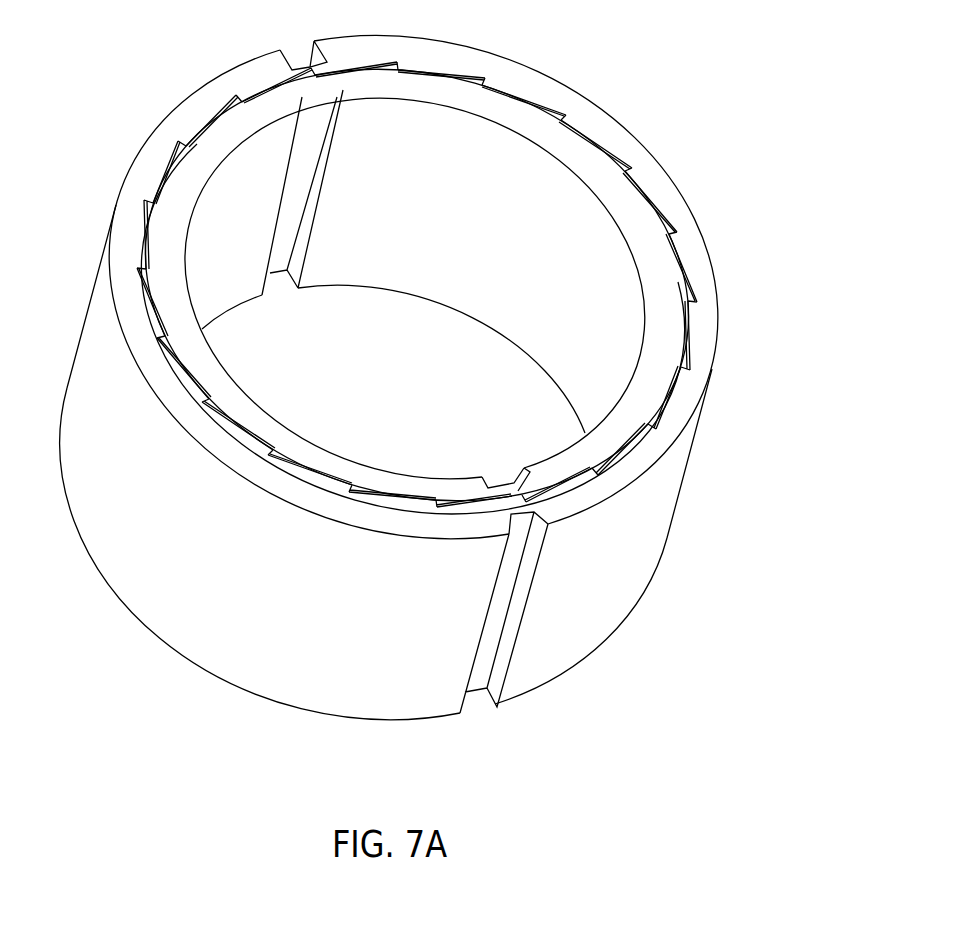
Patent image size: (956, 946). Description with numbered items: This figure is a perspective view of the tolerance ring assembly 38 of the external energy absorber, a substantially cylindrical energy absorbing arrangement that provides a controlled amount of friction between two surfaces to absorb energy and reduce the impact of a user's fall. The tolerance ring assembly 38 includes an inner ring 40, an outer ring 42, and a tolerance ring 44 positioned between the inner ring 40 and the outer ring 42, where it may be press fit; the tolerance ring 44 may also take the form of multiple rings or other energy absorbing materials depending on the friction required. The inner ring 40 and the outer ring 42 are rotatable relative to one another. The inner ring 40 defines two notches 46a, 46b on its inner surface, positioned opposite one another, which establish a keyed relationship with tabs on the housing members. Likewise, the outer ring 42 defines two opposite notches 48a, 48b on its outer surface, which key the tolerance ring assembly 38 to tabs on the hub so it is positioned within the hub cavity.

The tolerance ring assembly 38 is at (419, 384).
The inner ring 40 is at (657, 353).
The outer ring 42 is at (622, 470).
The tolerance ring 44 is at (684, 265).
The notch 46a is at (499, 481).
The notch 46b is at (278, 282).
The notch 48a is at (479, 700).
The notch 48b is at (300, 62).